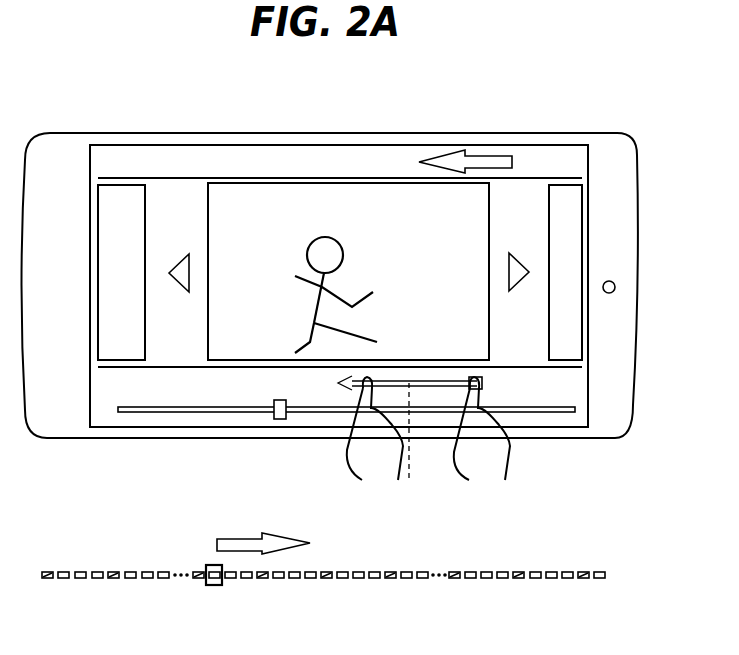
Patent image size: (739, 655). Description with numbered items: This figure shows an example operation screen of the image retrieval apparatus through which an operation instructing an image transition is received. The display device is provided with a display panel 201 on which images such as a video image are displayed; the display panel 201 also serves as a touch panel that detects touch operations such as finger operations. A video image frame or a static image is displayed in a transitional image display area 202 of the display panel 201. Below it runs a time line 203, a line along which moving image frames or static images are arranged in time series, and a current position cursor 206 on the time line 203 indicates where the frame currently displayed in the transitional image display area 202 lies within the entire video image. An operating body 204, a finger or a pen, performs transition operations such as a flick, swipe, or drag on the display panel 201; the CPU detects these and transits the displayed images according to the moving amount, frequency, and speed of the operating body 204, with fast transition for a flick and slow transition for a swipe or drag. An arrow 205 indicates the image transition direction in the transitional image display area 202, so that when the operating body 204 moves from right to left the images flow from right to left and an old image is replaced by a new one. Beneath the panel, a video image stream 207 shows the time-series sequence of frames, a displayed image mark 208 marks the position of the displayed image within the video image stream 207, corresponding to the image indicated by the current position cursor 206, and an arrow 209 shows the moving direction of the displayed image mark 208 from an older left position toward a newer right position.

The display panel 201 is at (183, 158).
The transitional image display area 202 is at (305, 183).
The time line 203 is at (165, 413).
The operating body 204 is at (507, 470).
The arrow 205 is at (488, 157).
The current position cursor 206 is at (278, 420).
The video image stream 207 is at (113, 578).
The displayed image mark 208 is at (213, 585).
The arrow 209 is at (318, 521).